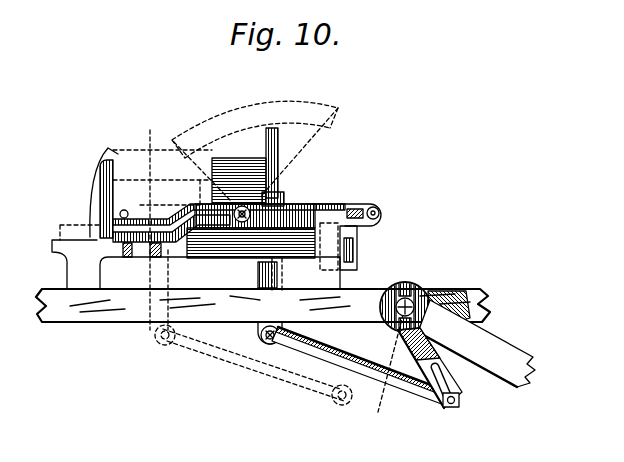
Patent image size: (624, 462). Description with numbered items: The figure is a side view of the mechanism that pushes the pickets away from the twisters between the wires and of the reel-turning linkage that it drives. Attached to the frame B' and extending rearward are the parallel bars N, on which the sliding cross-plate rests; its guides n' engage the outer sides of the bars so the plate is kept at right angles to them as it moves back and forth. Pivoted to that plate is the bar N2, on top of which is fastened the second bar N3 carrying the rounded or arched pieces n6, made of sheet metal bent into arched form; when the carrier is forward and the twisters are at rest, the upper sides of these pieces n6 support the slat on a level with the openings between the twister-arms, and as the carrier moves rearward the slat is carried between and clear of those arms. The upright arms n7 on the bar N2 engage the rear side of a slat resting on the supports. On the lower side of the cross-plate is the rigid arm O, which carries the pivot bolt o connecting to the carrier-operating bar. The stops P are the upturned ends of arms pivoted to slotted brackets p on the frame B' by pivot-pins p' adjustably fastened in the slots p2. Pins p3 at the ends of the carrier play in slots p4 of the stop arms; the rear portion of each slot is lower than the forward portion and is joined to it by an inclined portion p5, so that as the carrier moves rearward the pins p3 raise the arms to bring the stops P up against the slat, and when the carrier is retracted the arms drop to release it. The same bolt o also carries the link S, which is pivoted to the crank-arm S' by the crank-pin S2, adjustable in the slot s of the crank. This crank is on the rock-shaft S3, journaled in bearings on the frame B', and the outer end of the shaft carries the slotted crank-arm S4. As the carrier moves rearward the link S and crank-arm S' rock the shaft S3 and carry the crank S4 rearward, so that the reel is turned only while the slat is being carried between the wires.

The frame B' is at (263, 316).
The rigid arm O is at (280, 274).
The slot p4 is at (72, 247).
The stop P is at (100, 184).
The bracket p is at (237, 240).
The parallel bar N is at (219, 242).
The guide n' is at (185, 243).
The pivot-pin p' is at (361, 213).
The slot p2 is at (371, 206).
The upright arm n7 is at (278, 140).
The arched piece n6 is at (239, 171).
The second bar N3 is at (279, 178).
The bar N2 is at (282, 200).
The inclined portion p5 is at (186, 210).
The pin p3 is at (220, 258).
The pivot bolt o is at (268, 346).
The link S is at (303, 360).
The rock-shaft S3 is at (405, 307).
The crank-arm S4 is at (476, 339).
The crank-arm S' is at (427, 368).
The slot s is at (447, 372).
The crank-pin S2 is at (452, 408).